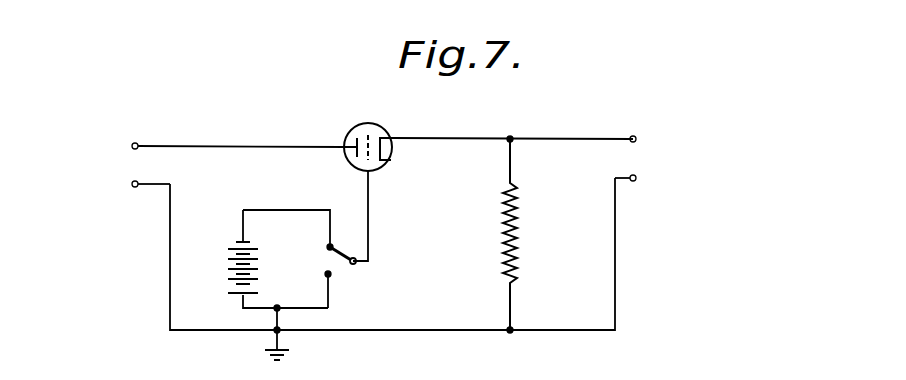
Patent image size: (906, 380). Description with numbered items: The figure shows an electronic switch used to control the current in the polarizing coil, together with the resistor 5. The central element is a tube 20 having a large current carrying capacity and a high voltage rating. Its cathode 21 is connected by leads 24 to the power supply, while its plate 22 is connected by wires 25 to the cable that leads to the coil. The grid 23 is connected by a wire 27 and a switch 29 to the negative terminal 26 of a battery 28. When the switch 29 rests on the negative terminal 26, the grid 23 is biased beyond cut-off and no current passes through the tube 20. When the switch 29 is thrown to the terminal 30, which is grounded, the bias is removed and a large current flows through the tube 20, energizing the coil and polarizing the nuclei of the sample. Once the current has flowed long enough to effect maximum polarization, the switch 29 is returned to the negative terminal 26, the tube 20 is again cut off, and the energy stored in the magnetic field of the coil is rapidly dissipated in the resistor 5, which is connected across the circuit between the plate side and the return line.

The resistor 5 is at (515, 225).
The tube 20 is at (380, 125).
The cathode 21 is at (393, 150).
The plate 22 is at (350, 146).
The grid 23 is at (366, 160).
The leads 24 is at (626, 176).
The wires 25 is at (148, 182).
The negative terminal 26 is at (334, 248).
The wire 27 is at (370, 222).
The battery 28 is at (228, 252).
The switch 29 is at (356, 263).
The terminal 30 is at (330, 275).